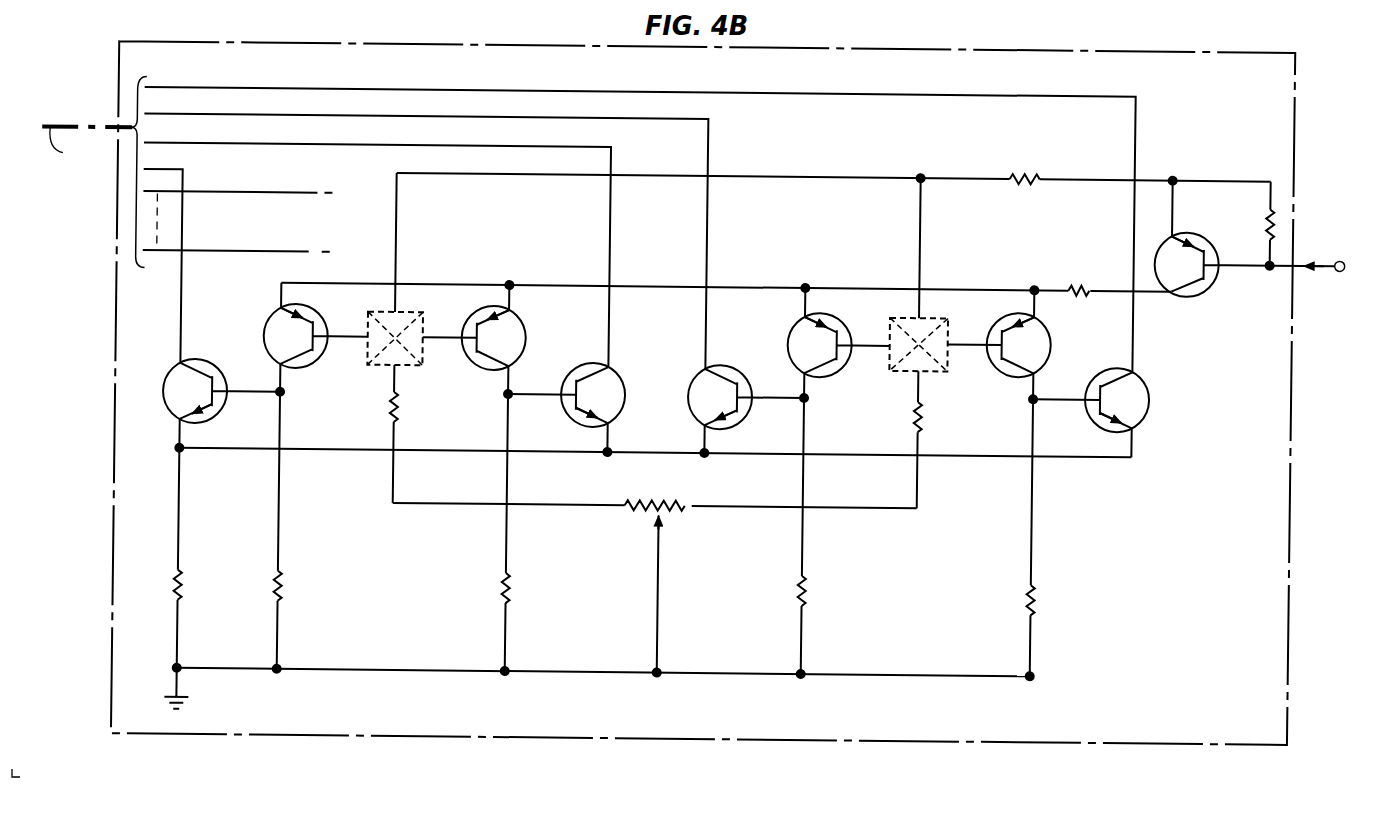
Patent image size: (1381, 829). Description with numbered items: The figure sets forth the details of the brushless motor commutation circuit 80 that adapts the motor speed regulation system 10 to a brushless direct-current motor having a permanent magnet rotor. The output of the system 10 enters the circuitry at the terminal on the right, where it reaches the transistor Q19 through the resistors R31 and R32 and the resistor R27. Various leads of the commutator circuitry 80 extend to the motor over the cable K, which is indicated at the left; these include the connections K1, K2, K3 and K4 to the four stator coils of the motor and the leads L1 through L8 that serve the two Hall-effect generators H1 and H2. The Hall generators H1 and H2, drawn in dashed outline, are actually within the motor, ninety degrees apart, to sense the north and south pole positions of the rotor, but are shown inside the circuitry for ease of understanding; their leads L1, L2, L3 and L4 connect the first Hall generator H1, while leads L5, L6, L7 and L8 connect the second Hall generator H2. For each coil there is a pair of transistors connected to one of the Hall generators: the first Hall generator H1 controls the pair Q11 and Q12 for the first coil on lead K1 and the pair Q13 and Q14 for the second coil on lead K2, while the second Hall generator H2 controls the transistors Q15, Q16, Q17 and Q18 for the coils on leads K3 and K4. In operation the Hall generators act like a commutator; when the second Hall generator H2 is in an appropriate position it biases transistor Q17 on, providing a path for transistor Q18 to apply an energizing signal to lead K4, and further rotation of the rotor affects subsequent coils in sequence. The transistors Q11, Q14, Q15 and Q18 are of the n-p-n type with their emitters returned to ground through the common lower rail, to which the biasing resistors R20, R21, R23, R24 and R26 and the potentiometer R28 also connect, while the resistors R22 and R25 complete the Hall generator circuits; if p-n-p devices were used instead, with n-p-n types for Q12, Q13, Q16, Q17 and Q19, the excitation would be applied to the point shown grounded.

The brushless motor commutation circuit 80 is at (1293, 64).
The cable K is at (58, 133).
The first motor coil connection K1 is at (181, 174).
The second motor coil connection K2 is at (277, 148).
The third motor coil connection K3 is at (282, 119).
The fourth motor coil connection K4 is at (237, 92).
The Hall generator lead L1 is at (295, 196).
The Hall generator lead L2 is at (342, 340).
The Hall generator lead L3 is at (406, 381).
The Hall generator lead L4 is at (428, 348).
The Hall generator lead L5 is at (917, 300).
The Hall generator lead L6 is at (862, 344).
The Hall generator lead L7 is at (966, 347).
The Hall generator lead L8 is at (293, 256).
The first Hall-effect generator H1 is at (420, 318).
The second Hall-effect generator H2 is at (945, 319).
The transistor Q11 is at (222, 414).
The transistor Q12 is at (313, 368).
The transistor Q13 is at (473, 368).
The transistor Q14 is at (570, 414).
The transistor Q15 is at (695, 414).
The transistor Q16 is at (835, 372).
The transistor Q17 is at (995, 370).
The transistor Q18 is at (1147, 418).
The transistor Q19 is at (1200, 297).
The resistor R20 is at (185, 588).
The resistor R21 is at (285, 588).
The resistor R22 is at (400, 413).
The resistor R23 is at (513, 588).
The resistor R24 is at (809, 588).
The resistor R25 is at (937, 439).
The resistor R26 is at (1038, 596).
The resistor R27 is at (726, 274).
The potentiometer R28 is at (674, 512).
The resistor R31 is at (1017, 176).
The resistor R32 is at (1262, 214).
The motor speed regulation system 10 is at (1336, 266).